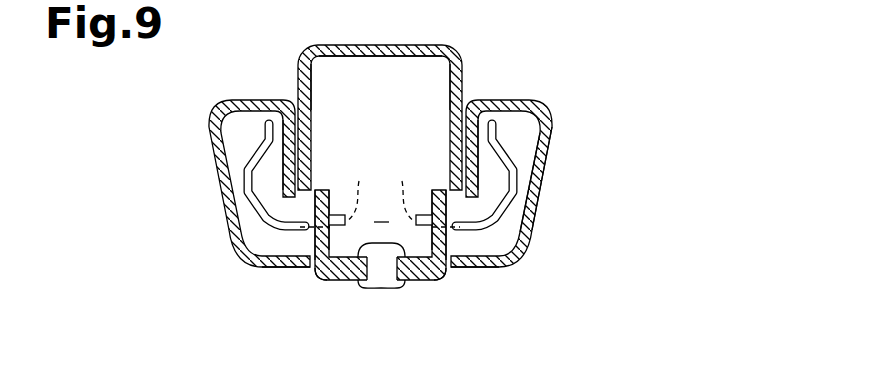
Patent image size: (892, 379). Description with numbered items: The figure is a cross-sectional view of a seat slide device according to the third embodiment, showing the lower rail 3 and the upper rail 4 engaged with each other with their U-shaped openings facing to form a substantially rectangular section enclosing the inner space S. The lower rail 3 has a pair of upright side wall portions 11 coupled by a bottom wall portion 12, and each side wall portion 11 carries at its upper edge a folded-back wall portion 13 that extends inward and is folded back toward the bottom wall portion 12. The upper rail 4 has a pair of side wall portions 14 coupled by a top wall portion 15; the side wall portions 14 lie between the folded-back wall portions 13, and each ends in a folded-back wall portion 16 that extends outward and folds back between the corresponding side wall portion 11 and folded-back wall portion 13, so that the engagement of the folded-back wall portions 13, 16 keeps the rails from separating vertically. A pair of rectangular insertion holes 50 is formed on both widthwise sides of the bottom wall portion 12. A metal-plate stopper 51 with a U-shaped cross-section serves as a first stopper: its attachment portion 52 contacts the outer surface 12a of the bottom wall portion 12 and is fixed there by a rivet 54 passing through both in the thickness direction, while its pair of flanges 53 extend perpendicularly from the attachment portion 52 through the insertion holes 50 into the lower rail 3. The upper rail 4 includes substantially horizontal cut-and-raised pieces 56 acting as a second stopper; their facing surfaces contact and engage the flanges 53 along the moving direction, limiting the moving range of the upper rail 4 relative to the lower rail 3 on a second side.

The lower rail 3 is at (541, 106).
The upper rail 4 is at (457, 46).
The side wall portion 11 is at (219, 190).
The bottom wall portion 12 is at (488, 268).
The outer surface 12a is at (429, 279).
The folded-back wall portion 13 is at (290, 133).
The side wall portion 14 is at (311, 97).
The top wall portion 15 is at (418, 46).
The folded-back wall portion 16 is at (213, 140).
The insertion hole 50 is at (318, 268).
The stopper 51 is at (327, 280).
The attachment portion 52 is at (362, 287).
The flange 53 is at (324, 191).
The rivet 54 is at (392, 288).
The cut-and-raised piece 56 is at (380, 194).
The inner space S is at (381, 210).